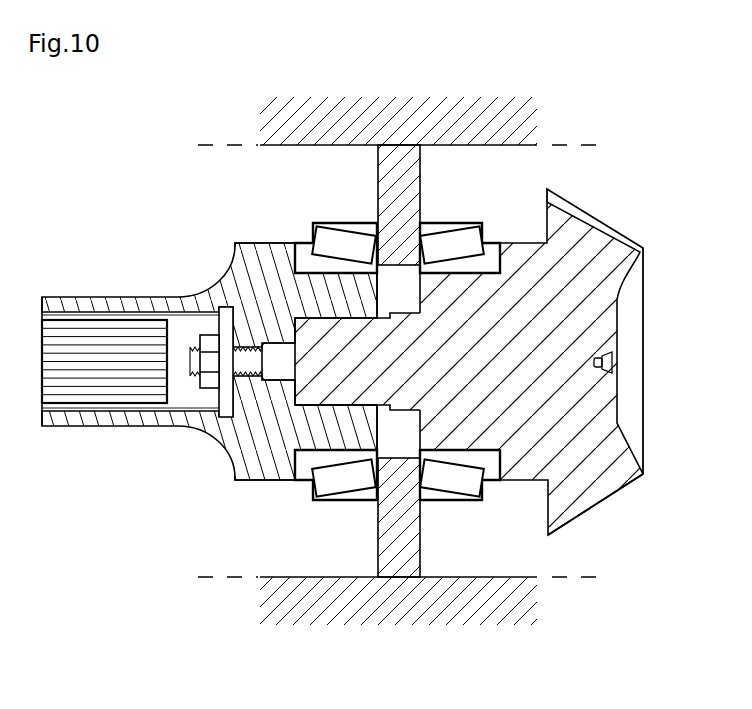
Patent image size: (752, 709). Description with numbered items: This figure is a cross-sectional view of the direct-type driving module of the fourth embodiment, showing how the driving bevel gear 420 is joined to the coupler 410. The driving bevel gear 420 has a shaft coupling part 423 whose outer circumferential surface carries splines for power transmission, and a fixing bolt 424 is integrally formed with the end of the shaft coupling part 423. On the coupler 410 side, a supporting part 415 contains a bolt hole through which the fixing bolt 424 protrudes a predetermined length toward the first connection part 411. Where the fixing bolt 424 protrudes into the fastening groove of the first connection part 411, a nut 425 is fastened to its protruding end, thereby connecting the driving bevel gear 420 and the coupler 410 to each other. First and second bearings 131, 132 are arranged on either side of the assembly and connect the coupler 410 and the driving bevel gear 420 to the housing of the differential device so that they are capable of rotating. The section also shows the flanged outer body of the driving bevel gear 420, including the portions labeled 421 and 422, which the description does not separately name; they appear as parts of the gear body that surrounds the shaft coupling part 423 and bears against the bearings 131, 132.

The coupler 410 is at (230, 522).
The first connection part 411 is at (102, 297).
The supporting part 415 is at (240, 262).
The first bearing 131 is at (340, 222).
The second bearing 132 is at (427, 228).
The driving bevel gear 420 is at (515, 556).
The flange 421 is at (600, 488).
The hub center portion 422 is at (453, 433).
The shaft coupling part 423 is at (340, 382).
The fixing bolt 424 is at (278, 373).
The nut 425 is at (207, 378).